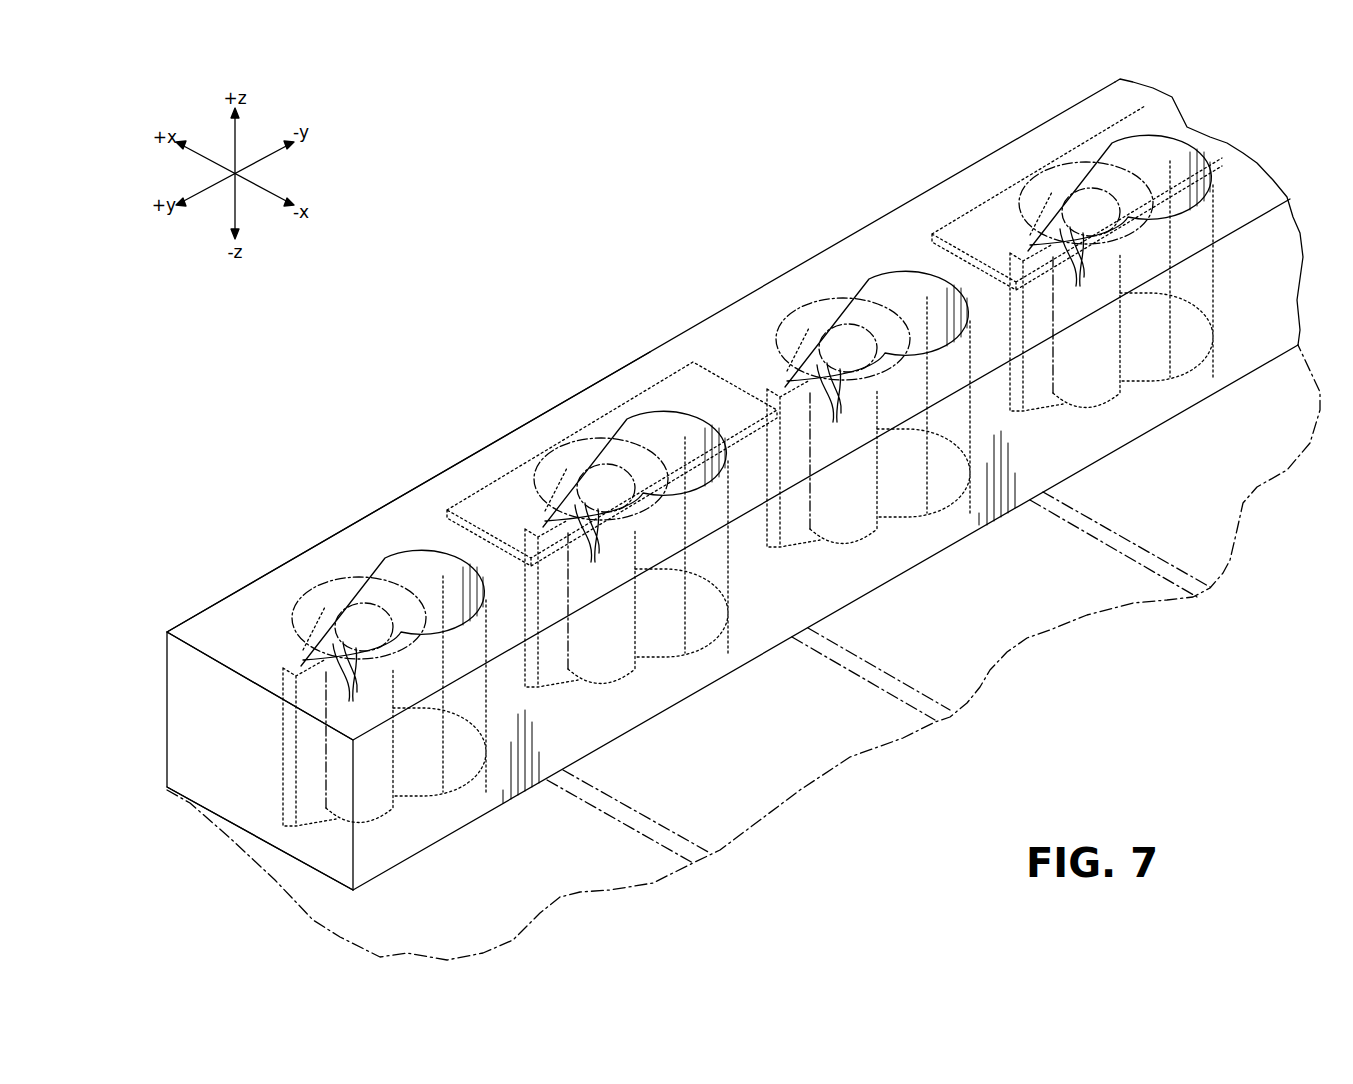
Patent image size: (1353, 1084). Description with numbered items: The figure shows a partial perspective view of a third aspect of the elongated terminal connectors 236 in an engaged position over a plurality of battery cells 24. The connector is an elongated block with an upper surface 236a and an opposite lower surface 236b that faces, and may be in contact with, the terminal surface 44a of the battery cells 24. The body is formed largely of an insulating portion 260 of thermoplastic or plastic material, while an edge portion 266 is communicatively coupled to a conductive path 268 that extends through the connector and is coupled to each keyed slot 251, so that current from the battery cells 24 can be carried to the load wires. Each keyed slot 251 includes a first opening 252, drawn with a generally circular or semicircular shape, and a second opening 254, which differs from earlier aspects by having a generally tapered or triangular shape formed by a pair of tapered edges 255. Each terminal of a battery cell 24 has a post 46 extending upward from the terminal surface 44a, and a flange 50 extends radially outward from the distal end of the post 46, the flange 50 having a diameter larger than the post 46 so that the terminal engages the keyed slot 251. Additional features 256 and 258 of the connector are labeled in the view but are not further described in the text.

The elongated terminal connector 236 is at (690, 501).
The upper surface 236a is at (217, 621).
The lower surface 236b is at (170, 808).
The end face 256 is at (185, 661).
The top surface 258 is at (712, 337).
The insulating portion 260 is at (225, 798).
The edge portion 266 is at (690, 464).
The conductive path 268 is at (833, 336).
The first opening 252 is at (756, 416).
The second opening 254 is at (722, 361).
The keyed slot 251 is at (708, 353).
The tapered edges 255 is at (717, 476).
The post 46 is at (727, 445).
The flange 50 is at (820, 490).
The terminal surface 44a is at (477, 890).
The battery cells 24 is at (818, 775).